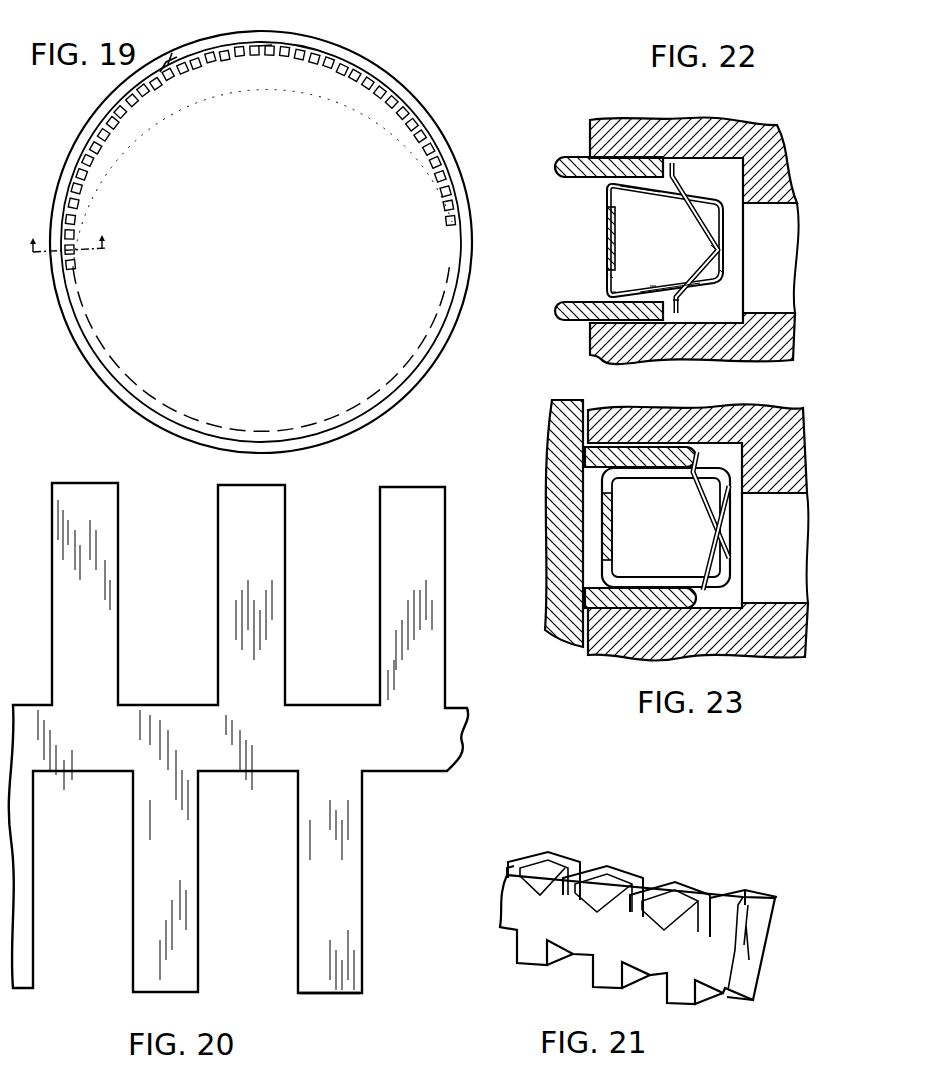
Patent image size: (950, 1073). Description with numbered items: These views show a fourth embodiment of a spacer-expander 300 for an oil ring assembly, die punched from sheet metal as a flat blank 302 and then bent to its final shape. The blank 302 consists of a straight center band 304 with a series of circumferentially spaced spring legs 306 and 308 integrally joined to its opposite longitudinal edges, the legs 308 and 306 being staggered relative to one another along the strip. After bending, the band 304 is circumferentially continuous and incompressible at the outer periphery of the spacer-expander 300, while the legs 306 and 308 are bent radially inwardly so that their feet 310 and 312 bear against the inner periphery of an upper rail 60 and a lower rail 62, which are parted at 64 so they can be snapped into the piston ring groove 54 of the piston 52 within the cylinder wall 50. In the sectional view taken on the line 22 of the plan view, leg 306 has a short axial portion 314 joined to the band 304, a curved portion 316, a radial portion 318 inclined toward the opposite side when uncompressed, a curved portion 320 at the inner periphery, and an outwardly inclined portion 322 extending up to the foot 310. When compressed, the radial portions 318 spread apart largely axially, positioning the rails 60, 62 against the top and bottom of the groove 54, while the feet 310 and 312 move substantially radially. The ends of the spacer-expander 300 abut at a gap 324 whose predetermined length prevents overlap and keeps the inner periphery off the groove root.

In FIG. 19, the section line 22- 22 is at (73, 257).
In FIG. 23, the cylinder wall 50 is at (584, 402).
In FIG. 22, the piston 52 is at (607, 122).
In FIG. 23, the piston 52 is at (657, 413).
In FIG. 22, the piston ring groove 54 is at (777, 140).
In FIG. 19, the upper rail 60 is at (453, 170).
In FIG. 22, the upper rail 60 is at (558, 167).
In FIG. 23, the upper rail 60 is at (585, 455).
In FIG. 19, the lower rail 62 is at (435, 113).
In FIG. 22, the lower rail 62 is at (558, 313).
In FIG. 23, the lower rail 62 is at (590, 600).
In FIG. 19, the rail parting 64 is at (172, 53).
In FIG. 19, the spacer-expander 300 is at (406, 125).
In FIG. 22, the spacer-expander 300 is at (601, 235).
In FIG. 21, the spacer-expander 300 is at (498, 897).
In FIG. 20, the blank 302 is at (335, 1001).
In FIG. 19, the center band 304 is at (420, 107).
In FIG. 20, the center band 304 is at (460, 737).
In FIG. 22, the center band 304 is at (607, 218).
In FIG. 23, the center band 304 is at (600, 523).
In FIG. 21, the center band 304 is at (738, 955).
In FIG. 20, the spring leg 306 is at (202, 834).
In FIG. 22, the spring leg 306 is at (705, 287).
In FIG. 23, the spring leg 306 is at (733, 559).
In FIG. 21, the spring leg 306 is at (632, 842).
In FIG. 20, the spring leg 308 is at (283, 597).
In FIG. 22, the spring leg 308 is at (650, 197).
In FIG. 23, the spring leg 308 is at (731, 509).
In FIG. 21, the spring leg 308 is at (662, 887).
In FIG. 22, the foot 310 is at (688, 158).
In FIG. 21, the foot 310 is at (560, 852).
In FIG. 22, the foot 312 is at (682, 317).
In FIG. 21, the foot 312 is at (745, 1000).
In FIG. 22, the axial portion 314 is at (610, 277).
In FIG. 22, the curved portion 316 is at (613, 293).
In FIG. 22, the radial portion 318 is at (652, 287).
In FIG. 23, the radial portion 318 is at (680, 548).
In FIG. 22, the curved portion 320 is at (722, 272).
In FIG. 22, the outwardly inclined portion 322 is at (713, 247).
In FIG. 19, the gap 324 is at (265, 50).